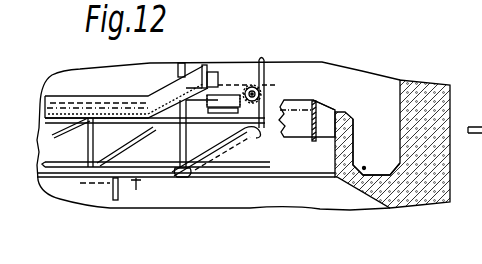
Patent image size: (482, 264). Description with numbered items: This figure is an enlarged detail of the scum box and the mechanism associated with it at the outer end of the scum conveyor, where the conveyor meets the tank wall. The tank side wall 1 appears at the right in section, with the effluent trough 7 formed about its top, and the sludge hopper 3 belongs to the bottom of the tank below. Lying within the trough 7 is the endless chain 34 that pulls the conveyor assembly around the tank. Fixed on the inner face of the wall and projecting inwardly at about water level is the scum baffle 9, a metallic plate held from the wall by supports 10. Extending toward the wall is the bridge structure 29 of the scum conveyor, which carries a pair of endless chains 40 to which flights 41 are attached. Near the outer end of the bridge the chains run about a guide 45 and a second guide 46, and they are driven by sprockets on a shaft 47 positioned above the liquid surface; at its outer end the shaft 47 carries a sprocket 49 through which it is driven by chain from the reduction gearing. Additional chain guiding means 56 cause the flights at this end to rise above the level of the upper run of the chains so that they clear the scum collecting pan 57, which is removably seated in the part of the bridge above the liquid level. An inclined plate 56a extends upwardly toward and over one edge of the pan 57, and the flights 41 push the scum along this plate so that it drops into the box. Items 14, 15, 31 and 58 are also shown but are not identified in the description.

The side wall 1 is at (450, 181).
The sludge hopper 3 is at (359, 0).
The effluent trough 7 is at (374, 152).
The scum baffle 9 is at (310, 126).
The supports 10 is at (328, 115).
The member 14 is at (403, 0).
The member 15 is at (382, 0).
The bridge structure 29 is at (142, 136).
The stub 31 is at (182, 63).
The endless chain 34 is at (364, 166).
The endless chains 40 is at (137, 186).
The flights 41 is at (205, 65).
The guide 45 is at (187, 177).
The second guide 46 is at (248, 140).
The shaft 47 is at (262, 90).
The sprocket 49 is at (255, 85).
The chain guiding means 56 is at (192, 110).
The inclined plate 56a is at (164, 107).
The scum collecting pan 57 is at (229, 95).
The plate 58 is at (78, 104).